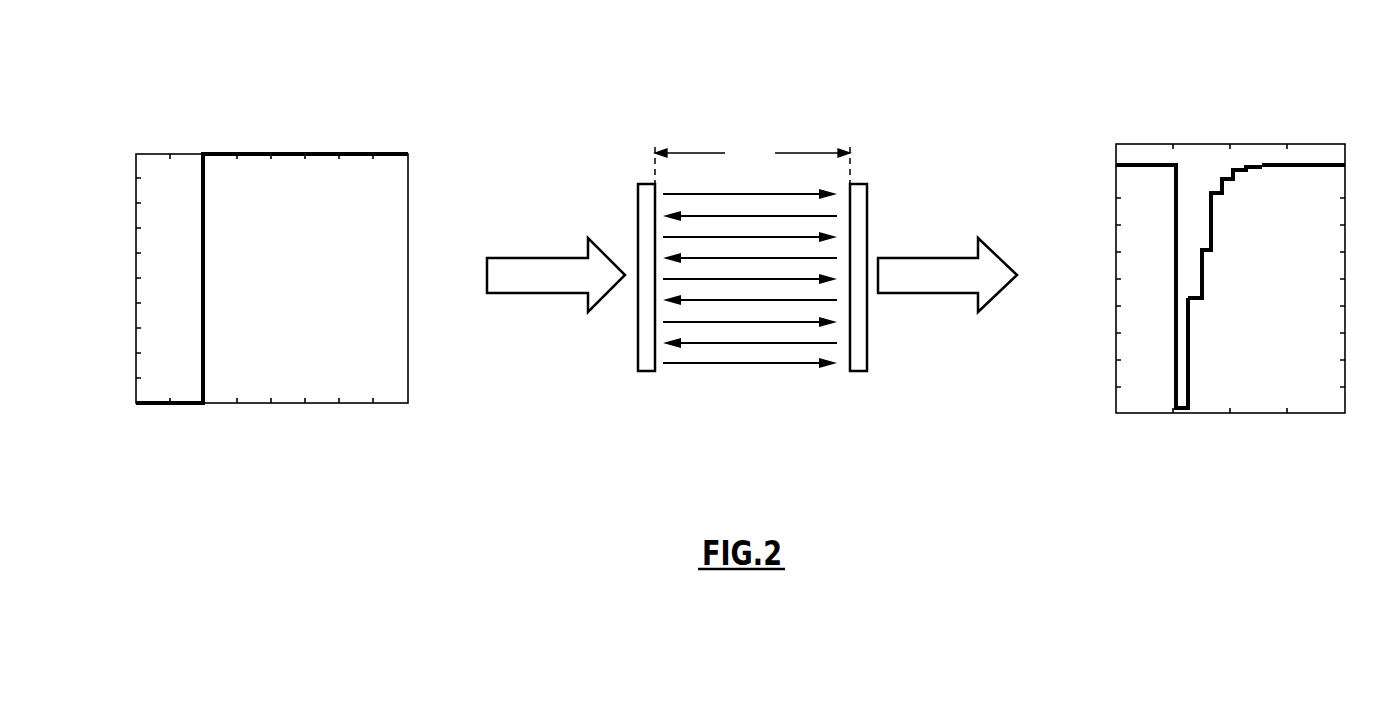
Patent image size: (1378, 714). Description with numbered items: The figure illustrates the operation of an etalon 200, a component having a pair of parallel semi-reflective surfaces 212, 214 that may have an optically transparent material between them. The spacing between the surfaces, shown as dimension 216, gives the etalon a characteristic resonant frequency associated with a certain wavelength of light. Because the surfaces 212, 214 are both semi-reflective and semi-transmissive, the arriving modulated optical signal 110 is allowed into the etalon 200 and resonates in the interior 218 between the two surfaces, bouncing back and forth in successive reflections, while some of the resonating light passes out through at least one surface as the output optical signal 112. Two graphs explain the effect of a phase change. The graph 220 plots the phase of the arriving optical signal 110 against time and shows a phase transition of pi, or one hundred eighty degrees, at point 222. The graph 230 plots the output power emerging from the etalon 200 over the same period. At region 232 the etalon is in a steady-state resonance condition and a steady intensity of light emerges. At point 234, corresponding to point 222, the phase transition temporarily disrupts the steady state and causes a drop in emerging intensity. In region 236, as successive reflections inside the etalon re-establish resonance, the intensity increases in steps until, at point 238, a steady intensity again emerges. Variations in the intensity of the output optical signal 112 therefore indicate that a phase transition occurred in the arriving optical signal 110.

The arriving modulated optical signal 110 is at (537, 258).
The output optical signal 112 is at (915, 258).
The etalon 200 is at (815, 78).
The semi-reflective surface 212 is at (637, 218).
The semi-reflective surface 214 is at (868, 218).
The dimension 216 is at (752, 161).
The interior 218 is at (755, 373).
The graph 220 is at (310, 112).
The point 222 is at (203, 148).
The graph 230 is at (1213, 102).
The region 232 is at (1140, 155).
The point 234 is at (1180, 188).
The region 236 is at (1203, 281).
The point 238 is at (1300, 168).